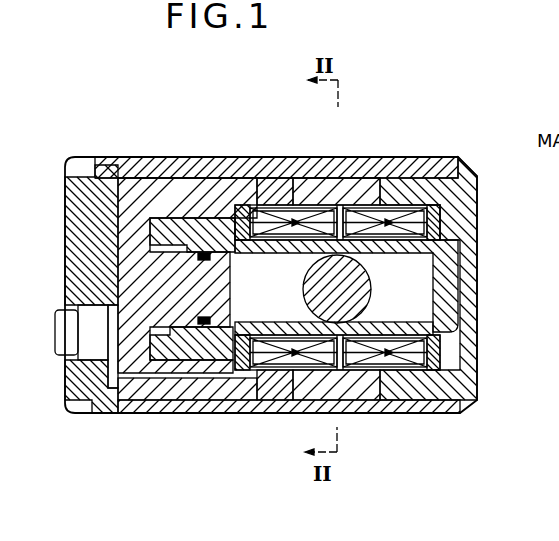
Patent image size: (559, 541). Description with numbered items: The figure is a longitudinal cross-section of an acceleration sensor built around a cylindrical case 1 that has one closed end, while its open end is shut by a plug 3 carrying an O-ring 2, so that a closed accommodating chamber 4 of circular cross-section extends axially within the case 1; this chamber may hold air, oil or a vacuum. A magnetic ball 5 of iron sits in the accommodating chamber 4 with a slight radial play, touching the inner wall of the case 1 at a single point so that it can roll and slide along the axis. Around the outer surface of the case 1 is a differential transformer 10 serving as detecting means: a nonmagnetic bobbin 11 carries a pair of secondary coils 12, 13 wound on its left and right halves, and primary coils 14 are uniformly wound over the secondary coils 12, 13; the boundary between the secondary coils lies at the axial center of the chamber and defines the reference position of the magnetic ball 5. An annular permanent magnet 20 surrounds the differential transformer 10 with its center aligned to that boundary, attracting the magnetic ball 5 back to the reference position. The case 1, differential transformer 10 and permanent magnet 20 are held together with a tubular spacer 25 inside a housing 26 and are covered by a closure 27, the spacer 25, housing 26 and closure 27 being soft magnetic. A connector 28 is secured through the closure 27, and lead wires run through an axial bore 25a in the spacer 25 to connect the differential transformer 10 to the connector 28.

The case 1 is at (466, 288).
The O-ring 2 is at (202, 253).
The plug 3 is at (132, 272).
The accommodating chamber 4 is at (422, 272).
The magnetic ball 5 is at (350, 262).
The differential transformer 10 is at (404, 199).
The bobbin 11 is at (245, 203).
The secondary coil 12 is at (262, 205).
The secondary coil 13 is at (417, 215).
The primary coil 14 is at (283, 212).
The permanent magnet 20 is at (332, 178).
The spacer 25 is at (165, 187).
The axial bore 25a is at (193, 378).
The housing 26 is at (134, 158).
The closure 27 is at (85, 222).
The connector 28 is at (65, 333).